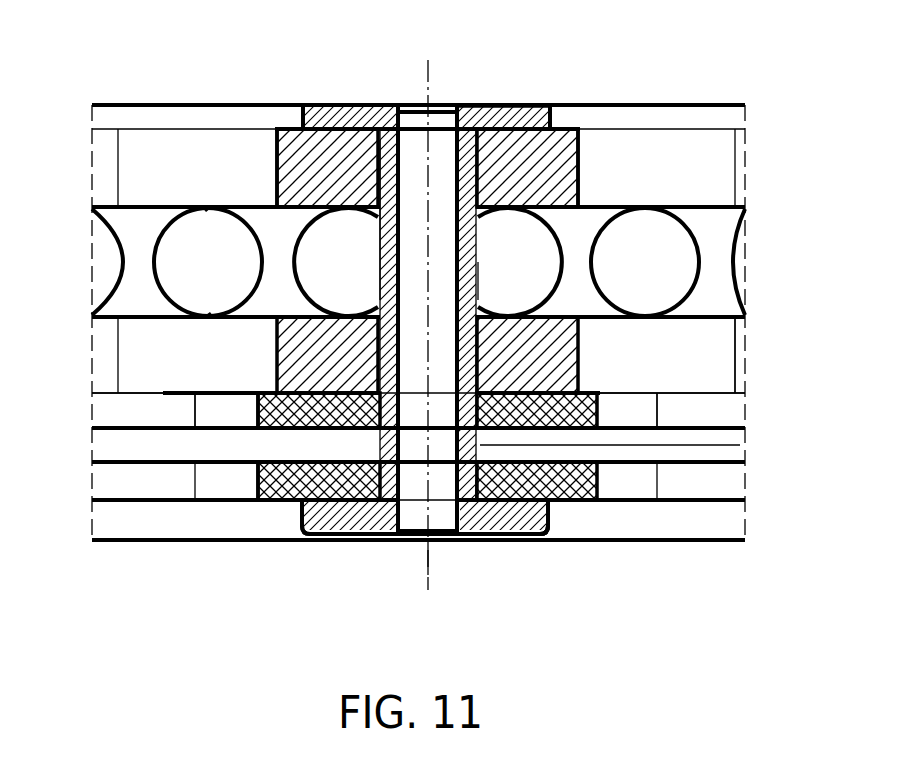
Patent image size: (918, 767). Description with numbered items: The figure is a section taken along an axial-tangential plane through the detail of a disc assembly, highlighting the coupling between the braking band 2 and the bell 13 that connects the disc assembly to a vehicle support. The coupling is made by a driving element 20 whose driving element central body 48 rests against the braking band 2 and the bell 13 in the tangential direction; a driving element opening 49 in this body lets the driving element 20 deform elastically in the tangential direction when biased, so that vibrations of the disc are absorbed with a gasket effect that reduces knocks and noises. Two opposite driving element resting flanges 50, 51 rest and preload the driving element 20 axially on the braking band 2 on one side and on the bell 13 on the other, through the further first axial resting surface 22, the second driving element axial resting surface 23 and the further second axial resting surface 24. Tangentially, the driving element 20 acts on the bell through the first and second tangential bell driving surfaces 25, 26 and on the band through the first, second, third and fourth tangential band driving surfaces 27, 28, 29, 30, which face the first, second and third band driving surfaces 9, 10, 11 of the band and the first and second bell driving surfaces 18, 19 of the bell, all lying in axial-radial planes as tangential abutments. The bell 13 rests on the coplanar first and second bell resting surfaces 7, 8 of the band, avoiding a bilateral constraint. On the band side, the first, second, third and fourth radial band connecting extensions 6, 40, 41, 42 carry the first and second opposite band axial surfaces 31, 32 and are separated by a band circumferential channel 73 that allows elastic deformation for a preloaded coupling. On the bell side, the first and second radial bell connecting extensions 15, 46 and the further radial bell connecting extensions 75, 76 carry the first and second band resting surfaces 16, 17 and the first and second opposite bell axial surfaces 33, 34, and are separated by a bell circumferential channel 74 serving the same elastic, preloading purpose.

The braking band 2 is at (690, 360).
The first radial band connecting extension 6 is at (720, 256).
The first bell resting surface 7 is at (545, 335).
The second bell resting surface 8 is at (330, 476).
The first driving band surface 9 is at (600, 290).
The second band driving surface 10 is at (450, 105).
The third band driving surface 11 is at (388, 262).
The bell 13 is at (740, 395).
The first radial bell connecting extension 15 is at (690, 325).
The first band resting surface 16 is at (600, 495).
The second band resting surface 17 is at (340, 450).
The first bell driving surface 18 is at (640, 520).
The second bell driving surface 19 is at (350, 510).
The driving element 20 is at (505, 105).
The further first axial resting surface 22 is at (330, 105).
The second driving element axial resting surface 23 is at (560, 505).
The further second axial resting surface 24 is at (330, 520).
The first tangential bell driving surface 25 is at (500, 532).
The second tangential bell driving surface 26 is at (384, 505).
The first tangential driving band surface 27 is at (466, 505).
The second tangential band driving surface 28 is at (485, 105).
The third tangential band driving surface 29 is at (330, 345).
The fourth tangential band driving surface 30 is at (383, 240).
The first opposite band axial surface 31 is at (587, 105).
The second opposite band axial surface 32 is at (290, 104).
The first opposite bell axial surface 33 is at (560, 480).
The second opposite bell axial surface 34 is at (300, 536).
The second radial band connecting extension 40 is at (300, 410).
The third radial band connecting extension 41 is at (600, 360).
The fourth radial band connecting extension 42 is at (325, 190).
The second radial bell connecting extension 46 is at (350, 430).
The driving element central body 48 is at (385, 318).
The driving element opening 49 is at (516, 275).
The driving element resting flange 50 is at (424, 545).
The driving element resting flange 51 is at (386, 105).
The band circumferential channel 73 is at (562, 260).
The bell circumferential channel 74 is at (680, 445).
The radial bell connecting extension 75 is at (600, 520).
The radial bell connecting extension 76 is at (340, 470).